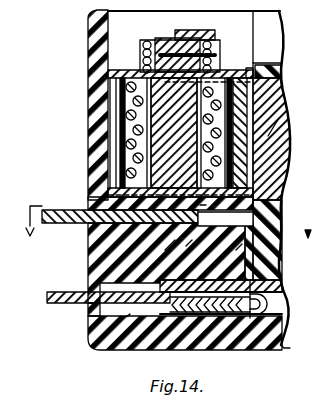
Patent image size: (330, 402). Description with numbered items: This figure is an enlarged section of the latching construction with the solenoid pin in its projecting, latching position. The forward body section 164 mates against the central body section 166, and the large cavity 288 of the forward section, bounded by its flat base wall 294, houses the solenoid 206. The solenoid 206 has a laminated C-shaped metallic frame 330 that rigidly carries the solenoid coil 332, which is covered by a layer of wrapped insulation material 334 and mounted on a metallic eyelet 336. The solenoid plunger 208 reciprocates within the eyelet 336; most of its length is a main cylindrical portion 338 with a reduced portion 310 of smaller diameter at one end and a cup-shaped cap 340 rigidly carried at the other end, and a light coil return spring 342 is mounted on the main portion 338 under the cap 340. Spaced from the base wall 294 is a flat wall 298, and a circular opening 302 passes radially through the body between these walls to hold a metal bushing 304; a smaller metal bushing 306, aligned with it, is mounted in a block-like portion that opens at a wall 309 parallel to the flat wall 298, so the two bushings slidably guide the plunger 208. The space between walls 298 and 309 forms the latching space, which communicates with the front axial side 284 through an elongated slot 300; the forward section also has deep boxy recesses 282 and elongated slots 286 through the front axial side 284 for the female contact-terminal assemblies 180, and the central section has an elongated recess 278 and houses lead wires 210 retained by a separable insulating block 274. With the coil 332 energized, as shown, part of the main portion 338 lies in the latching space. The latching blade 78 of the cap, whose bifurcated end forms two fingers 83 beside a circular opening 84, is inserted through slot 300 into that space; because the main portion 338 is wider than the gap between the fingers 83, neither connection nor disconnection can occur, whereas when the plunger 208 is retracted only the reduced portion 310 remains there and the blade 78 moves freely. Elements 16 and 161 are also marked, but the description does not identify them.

The coupling assembly 16 is at (30, 231).
The latching blade 78 is at (143, 241).
The fingers 83 is at (284, 247).
The circular opening 84 is at (112, 234).
The section 161 is at (317, 241).
The forward body section 164 is at (97, 338).
The central body section 166 is at (301, 348).
The female contact-terminal assemblies 180 is at (281, 311).
The solenoid 206 is at (276, 93).
The solenoid plunger 208 is at (203, 219).
The lead wires 210 is at (273, 136).
The insulating block 274 is at (262, 66).
The elongated recess 278 is at (282, 264).
The deep boxy recesses 282 is at (126, 318).
The front axial side 284 is at (100, 141).
The elongated slots 286 is at (85, 288).
The cavity 288 is at (114, 86).
The base wall 294 is at (112, 176).
The flat wall 298 is at (96, 203).
The elongated slot 300 is at (81, 222).
The circular opening 302 is at (116, 190).
The metal bushing 304 is at (219, 205).
The metal bushing 306 is at (187, 247).
The wall 309 is at (237, 252).
The reduced portion 310 is at (165, 257).
The C-shaped metallic frame 330 is at (272, 74).
The solenoid coil 332 is at (128, 114).
The wrapped insulation material 334 is at (282, 77).
The metallic eyelet 336 is at (120, 98).
The main cylindrical portion 338 is at (115, 128).
The cup-shaped cap 340 is at (227, 28).
The coil return spring 342 is at (147, 60).